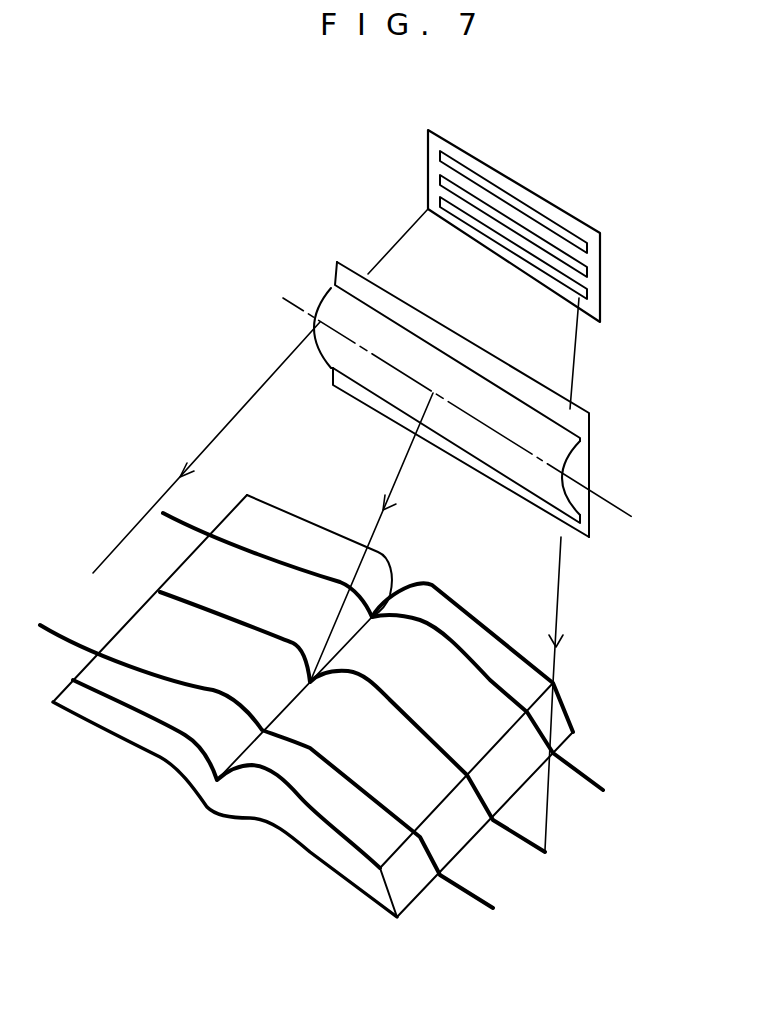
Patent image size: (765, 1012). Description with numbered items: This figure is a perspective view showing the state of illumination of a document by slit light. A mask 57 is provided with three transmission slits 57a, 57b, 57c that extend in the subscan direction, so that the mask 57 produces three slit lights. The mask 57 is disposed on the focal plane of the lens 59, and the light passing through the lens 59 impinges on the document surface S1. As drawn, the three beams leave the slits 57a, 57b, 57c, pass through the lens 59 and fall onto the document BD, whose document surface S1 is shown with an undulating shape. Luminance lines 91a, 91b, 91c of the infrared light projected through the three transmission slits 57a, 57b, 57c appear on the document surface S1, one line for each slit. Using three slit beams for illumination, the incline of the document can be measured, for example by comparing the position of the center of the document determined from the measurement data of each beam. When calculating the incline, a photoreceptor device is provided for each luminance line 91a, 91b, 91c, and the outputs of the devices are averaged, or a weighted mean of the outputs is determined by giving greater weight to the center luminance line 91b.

The mask 57 is at (428, 149).
The transmission slit 57a is at (475, 169).
The transmission slit 57b is at (458, 330).
The transmission slit 57c is at (547, 268).
The lens 59 is at (319, 304).
The document surface S1 is at (187, 714).
The recording medium BD is at (293, 818).
The luminance line 91a is at (478, 898).
The luminance line 91b is at (527, 851).
The luminance line 91c is at (579, 778).